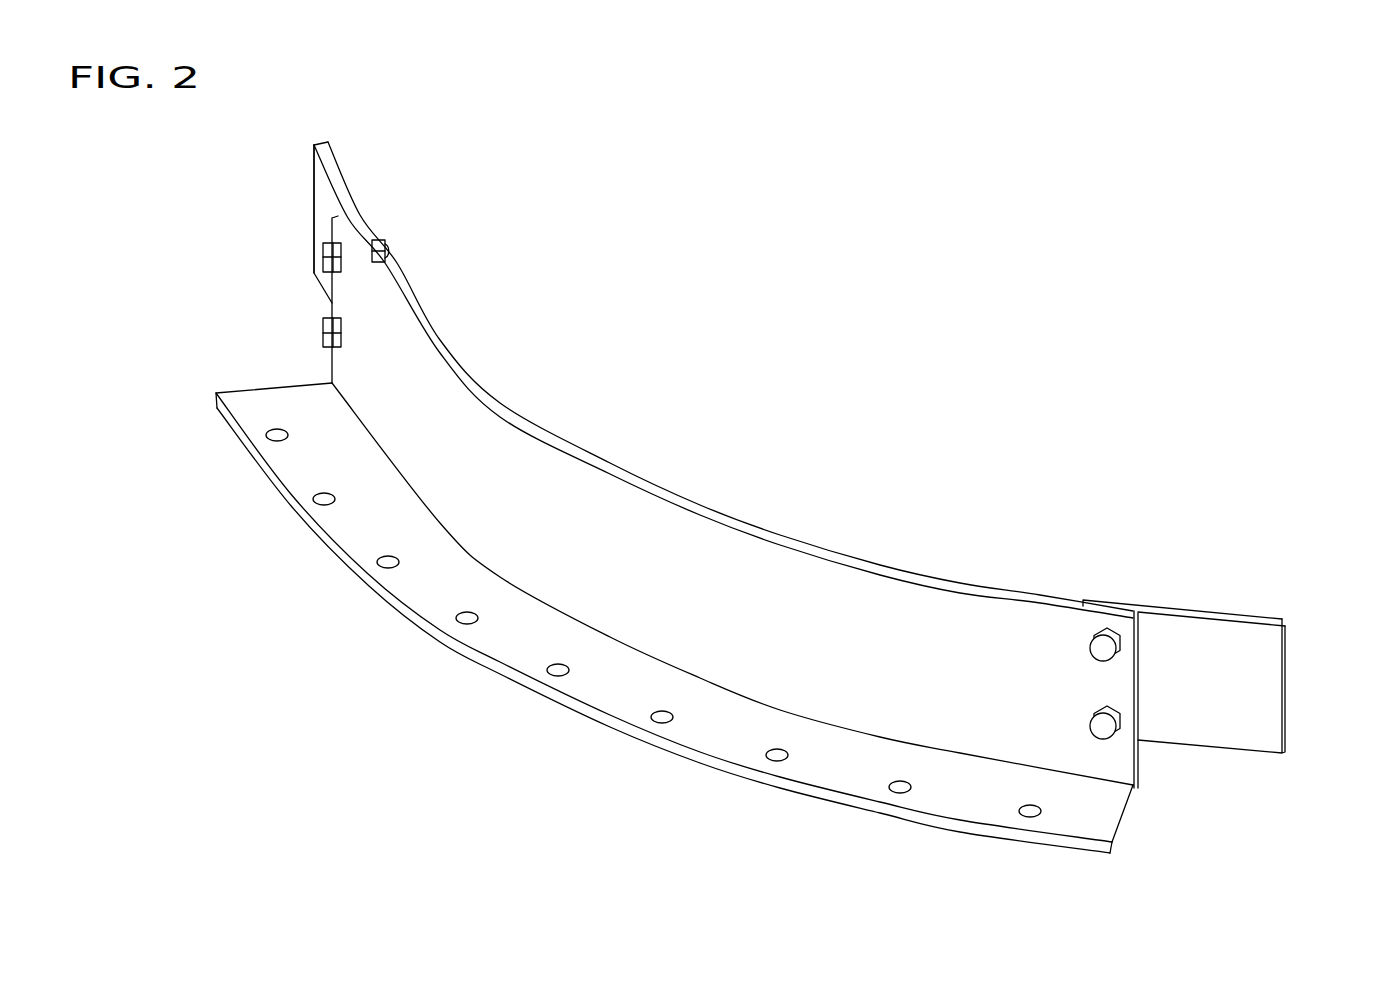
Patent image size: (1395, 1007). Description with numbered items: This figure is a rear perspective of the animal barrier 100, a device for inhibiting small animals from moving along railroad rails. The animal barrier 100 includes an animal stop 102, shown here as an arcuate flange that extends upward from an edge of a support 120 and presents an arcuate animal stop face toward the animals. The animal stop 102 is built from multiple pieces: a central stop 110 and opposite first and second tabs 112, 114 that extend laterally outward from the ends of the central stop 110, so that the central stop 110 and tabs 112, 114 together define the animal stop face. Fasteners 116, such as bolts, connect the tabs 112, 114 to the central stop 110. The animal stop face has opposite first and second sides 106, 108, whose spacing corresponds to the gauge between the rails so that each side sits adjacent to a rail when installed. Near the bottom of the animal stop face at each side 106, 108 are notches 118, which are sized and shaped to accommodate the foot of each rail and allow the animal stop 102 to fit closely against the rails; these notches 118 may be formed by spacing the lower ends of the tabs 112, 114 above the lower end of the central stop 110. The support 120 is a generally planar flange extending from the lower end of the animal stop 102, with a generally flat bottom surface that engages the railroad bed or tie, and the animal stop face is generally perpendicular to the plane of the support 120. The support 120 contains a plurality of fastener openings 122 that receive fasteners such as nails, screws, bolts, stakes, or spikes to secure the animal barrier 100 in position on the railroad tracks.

The animal barrier 100 is at (1028, 317).
The animal stop 102 is at (893, 567).
The first side 106 is at (1283, 705).
The second side 108 is at (313, 173).
The central stop 110 is at (697, 540).
The first tab 112 is at (1262, 655).
The second tab 114 is at (333, 167).
The fasteners 116 is at (377, 238).
The notches 118 is at (318, 303).
The support 120 is at (931, 830).
The fastener openings 122 is at (323, 503).